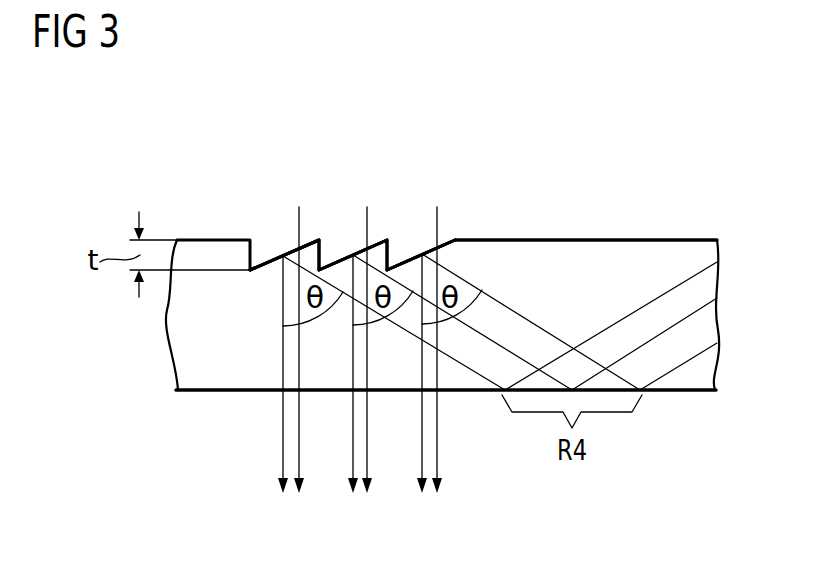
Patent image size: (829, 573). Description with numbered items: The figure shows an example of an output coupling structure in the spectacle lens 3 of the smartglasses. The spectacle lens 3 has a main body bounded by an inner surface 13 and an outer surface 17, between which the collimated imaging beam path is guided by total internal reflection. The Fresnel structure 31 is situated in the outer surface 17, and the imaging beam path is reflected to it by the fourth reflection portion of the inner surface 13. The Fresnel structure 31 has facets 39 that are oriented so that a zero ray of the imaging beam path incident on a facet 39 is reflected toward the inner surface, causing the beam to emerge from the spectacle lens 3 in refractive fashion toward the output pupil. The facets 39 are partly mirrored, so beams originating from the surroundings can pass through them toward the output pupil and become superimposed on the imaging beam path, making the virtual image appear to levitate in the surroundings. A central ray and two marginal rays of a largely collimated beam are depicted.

The spectacle lens 3 is at (615, 258).
The inner surface 13 is at (688, 392).
The outer surface 17 is at (524, 240).
The Fresnel structure 31 is at (286, 148).
The facets 39 is at (272, 252).